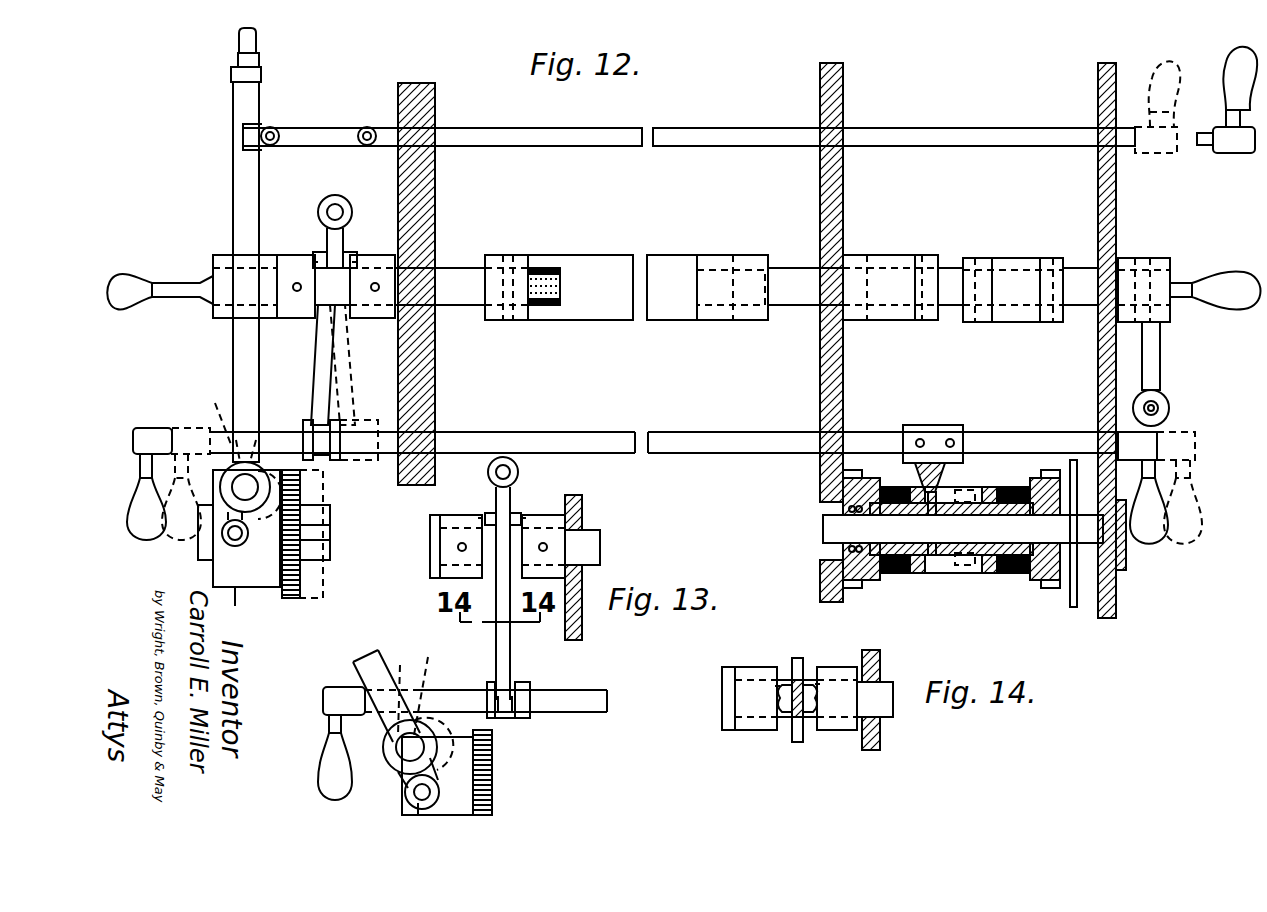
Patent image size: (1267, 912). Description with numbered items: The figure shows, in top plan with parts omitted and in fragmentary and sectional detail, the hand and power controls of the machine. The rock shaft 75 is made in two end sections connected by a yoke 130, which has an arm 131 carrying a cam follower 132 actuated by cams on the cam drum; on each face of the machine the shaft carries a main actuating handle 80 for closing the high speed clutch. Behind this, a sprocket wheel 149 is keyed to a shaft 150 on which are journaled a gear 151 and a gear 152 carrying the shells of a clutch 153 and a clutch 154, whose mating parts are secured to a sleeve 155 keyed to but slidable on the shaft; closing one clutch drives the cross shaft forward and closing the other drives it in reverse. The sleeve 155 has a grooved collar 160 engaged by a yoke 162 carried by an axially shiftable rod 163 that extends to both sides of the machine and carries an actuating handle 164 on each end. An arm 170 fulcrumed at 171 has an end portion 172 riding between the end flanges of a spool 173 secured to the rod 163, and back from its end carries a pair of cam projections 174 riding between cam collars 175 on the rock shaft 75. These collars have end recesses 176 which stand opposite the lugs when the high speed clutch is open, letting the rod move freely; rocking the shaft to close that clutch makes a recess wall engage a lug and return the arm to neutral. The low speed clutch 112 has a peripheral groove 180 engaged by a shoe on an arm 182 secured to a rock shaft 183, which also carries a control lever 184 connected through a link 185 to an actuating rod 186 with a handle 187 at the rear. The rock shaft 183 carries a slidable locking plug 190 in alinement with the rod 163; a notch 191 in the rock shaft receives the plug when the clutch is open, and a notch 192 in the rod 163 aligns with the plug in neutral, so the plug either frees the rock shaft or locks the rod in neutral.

In FIG. 12, the rock shaft 75 is at (496, 222).
In FIG. 13, the rock shaft 75 is at (656, 515).
In FIG. 14, the rock shaft 75 is at (882, 707).
In FIG. 12, the main actuating handle 80 is at (150, 309).
In FIG. 12, the clutch 112 is at (264, 534).
In FIG. 13, the clutch 112 is at (447, 772).
In FIG. 12, the yoke 130 is at (602, 322).
In FIG. 12, the arm 131 is at (518, 262).
In FIG. 12, the cam follower 132 is at (546, 268).
In FIG. 12, the sprocket wheel 149 is at (1073, 607).
In FIG. 12, the shaft 150 is at (1135, 597).
In FIG. 12, the gear 151 is at (1052, 588).
In FIG. 12, the gear 152 is at (855, 588).
In FIG. 12, the clutch 153 is at (1010, 575).
In FIG. 12, the clutch 154 is at (900, 575).
In FIG. 12, the sleeve 155 is at (952, 562).
In FIG. 12, the grooved collar 160 is at (940, 565).
In FIG. 12, the yoke 162 is at (945, 490).
In FIG. 12, the rod 163 is at (742, 432).
In FIG. 13, the rod 163 is at (590, 700).
In FIG. 12, the actuating handle 164 is at (138, 522).
In FIG. 13, the actuating handle 164 is at (325, 767).
In FIG. 12, the arm 170 is at (320, 352).
In FIG. 13, the arm 170 is at (496, 657).
In FIG. 14, the arm 170 is at (796, 745).
In FIG. 12, the fulcrum 171 is at (338, 210).
In FIG. 13, the fulcrum 171 is at (508, 474).
In FIG. 12, the end portion 172 is at (310, 425).
In FIG. 13, the end portion 172 is at (509, 690).
In FIG. 12, the spool 173 is at (326, 462).
In FIG. 13, the spool 173 is at (530, 690).
In FIG. 12, the cam projections 174 is at (316, 250).
In FIG. 13, the cam projections 174 is at (490, 513).
In FIG. 14, the cam projections 174 is at (783, 717).
In FIG. 12, the cam collars 175 is at (292, 318).
In FIG. 13, the cam collars 175 is at (447, 557).
In FIG. 14, the cam collars 175 is at (745, 672).
In FIG. 12, the end recesses 176 is at (313, 256).
In FIG. 13, the end recesses 176 is at (478, 518).
In FIG. 14, the end recesses 176 is at (775, 686).
In FIG. 12, the peripheral groove 180 is at (240, 603).
In FIG. 13, the peripheral groove 180 is at (412, 810).
In FIG. 12, the arm 182 is at (225, 527).
In FIG. 13, the arm 182 is at (406, 782).
In FIG. 12, the rock shaft 183 is at (238, 487).
In FIG. 13, the rock shaft 183 is at (432, 737).
In FIG. 12, the control lever 184 is at (233, 354).
In FIG. 13, the control lever 184 is at (388, 655).
In FIG. 12, the link 185 is at (370, 77).
In FIG. 12, the actuating rod 186 is at (560, 128).
In FIG. 12, the handle 187 is at (1238, 68).
In FIG. 12, the locking plug 190 is at (245, 445).
In FIG. 13, the locking plug 190 is at (420, 710).
In FIG. 12, the notch 191 is at (270, 513).
In FIG. 13, the notch 191 is at (398, 744).
In FIG. 12, the notch 192 is at (207, 414).
In FIG. 13, the notch 192 is at (431, 684).